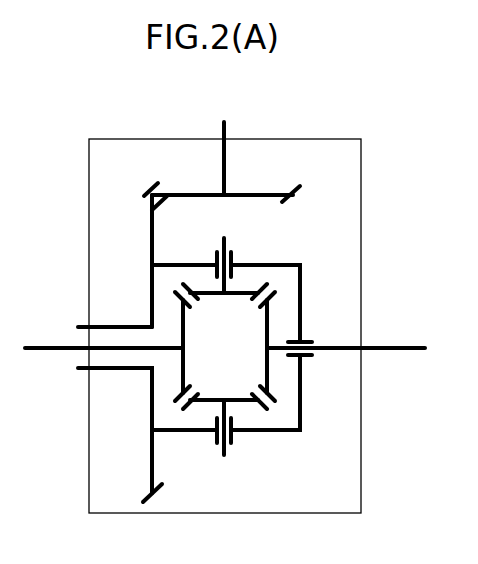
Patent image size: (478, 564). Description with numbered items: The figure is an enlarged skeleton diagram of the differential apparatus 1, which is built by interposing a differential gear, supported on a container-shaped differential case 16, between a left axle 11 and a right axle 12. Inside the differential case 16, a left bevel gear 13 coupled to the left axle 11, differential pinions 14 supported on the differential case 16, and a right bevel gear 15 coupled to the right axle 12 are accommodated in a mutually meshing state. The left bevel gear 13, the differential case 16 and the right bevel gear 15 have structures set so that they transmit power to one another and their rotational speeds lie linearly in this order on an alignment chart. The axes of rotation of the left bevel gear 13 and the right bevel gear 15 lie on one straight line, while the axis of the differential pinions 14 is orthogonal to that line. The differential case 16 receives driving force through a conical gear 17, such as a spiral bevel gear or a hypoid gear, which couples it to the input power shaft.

The differential apparatus 1 is at (361, 452).
The left axle 11 is at (54, 344).
The right axle 12 is at (394, 346).
The left bevel gear 13 is at (182, 380).
The differential pinions 14 is at (250, 292).
The right bevel gear 15 is at (267, 373).
The differential case 16 is at (150, 292).
The conical gear 17 is at (256, 194).